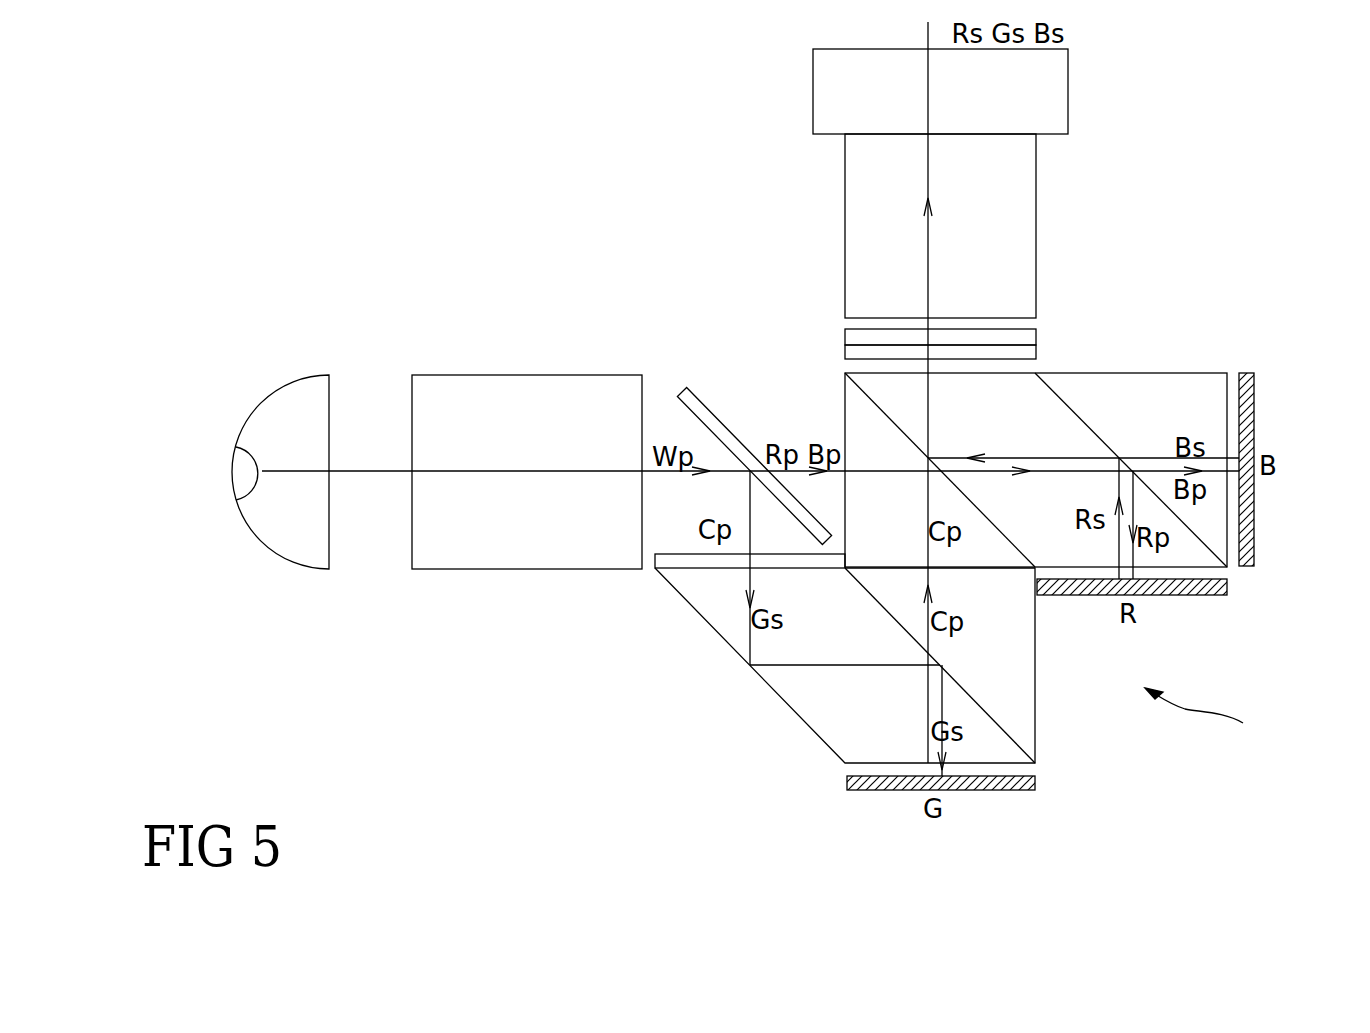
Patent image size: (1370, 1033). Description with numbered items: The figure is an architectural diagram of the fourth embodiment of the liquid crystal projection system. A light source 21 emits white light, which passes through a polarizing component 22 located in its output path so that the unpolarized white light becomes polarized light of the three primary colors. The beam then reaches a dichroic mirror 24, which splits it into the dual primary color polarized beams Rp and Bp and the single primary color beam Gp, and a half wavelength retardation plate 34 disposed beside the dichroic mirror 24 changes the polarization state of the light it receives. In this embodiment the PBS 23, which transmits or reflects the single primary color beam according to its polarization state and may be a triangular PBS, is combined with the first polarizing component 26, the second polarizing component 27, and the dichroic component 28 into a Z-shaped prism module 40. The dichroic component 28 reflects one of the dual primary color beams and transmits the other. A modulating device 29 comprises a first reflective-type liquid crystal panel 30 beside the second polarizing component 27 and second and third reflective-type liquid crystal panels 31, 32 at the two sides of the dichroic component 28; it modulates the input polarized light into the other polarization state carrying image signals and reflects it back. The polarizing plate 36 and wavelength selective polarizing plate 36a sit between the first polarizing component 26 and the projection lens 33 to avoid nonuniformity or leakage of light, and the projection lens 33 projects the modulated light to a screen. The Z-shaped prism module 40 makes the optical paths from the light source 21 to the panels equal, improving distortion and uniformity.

The light source 21 is at (275, 553).
The polarizing component 22 is at (460, 569).
The PBS 23 is at (698, 612).
The dichroic mirror 24 is at (712, 420).
The first polarizing component 26 is at (903, 430).
The second polarizing component 27 is at (1004, 738).
The dichroic component 28 is at (1096, 434).
The modulating device 29 is at (1213, 718).
The first reflective-type liquid crystal panel 30 is at (1035, 783).
The second reflective-type liquid crystal panel 31 is at (1227, 590).
The third reflective-type liquid crystal panel 32 is at (1254, 410).
The projection lens 33 is at (1068, 90).
The half wavelength retardation plate 34 is at (652, 560).
The polarizing plate 36 is at (1036, 340).
The wavelength selective polarizing plate 36a is at (1036, 352).
The Z-shaped prism module 40 is at (1186, 373).